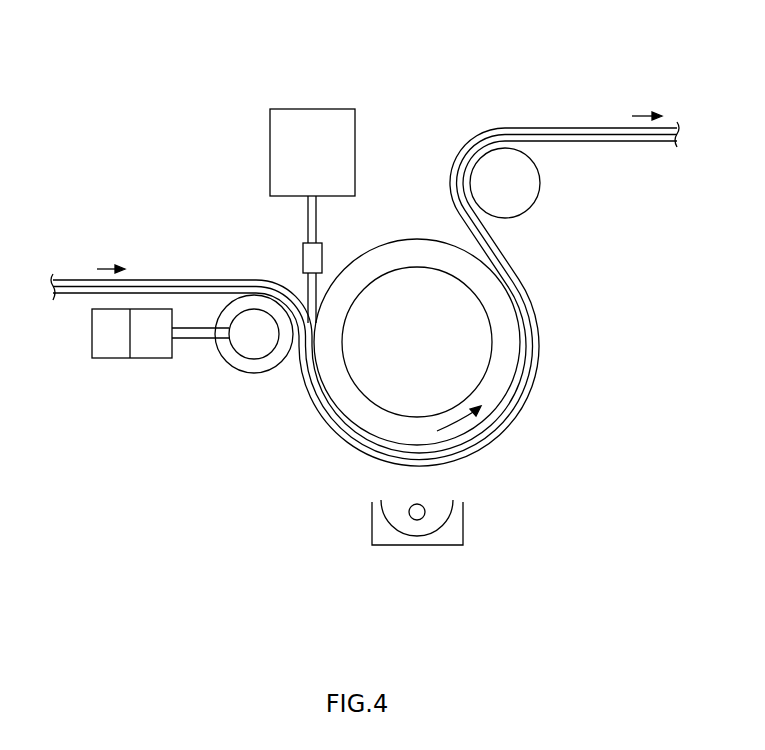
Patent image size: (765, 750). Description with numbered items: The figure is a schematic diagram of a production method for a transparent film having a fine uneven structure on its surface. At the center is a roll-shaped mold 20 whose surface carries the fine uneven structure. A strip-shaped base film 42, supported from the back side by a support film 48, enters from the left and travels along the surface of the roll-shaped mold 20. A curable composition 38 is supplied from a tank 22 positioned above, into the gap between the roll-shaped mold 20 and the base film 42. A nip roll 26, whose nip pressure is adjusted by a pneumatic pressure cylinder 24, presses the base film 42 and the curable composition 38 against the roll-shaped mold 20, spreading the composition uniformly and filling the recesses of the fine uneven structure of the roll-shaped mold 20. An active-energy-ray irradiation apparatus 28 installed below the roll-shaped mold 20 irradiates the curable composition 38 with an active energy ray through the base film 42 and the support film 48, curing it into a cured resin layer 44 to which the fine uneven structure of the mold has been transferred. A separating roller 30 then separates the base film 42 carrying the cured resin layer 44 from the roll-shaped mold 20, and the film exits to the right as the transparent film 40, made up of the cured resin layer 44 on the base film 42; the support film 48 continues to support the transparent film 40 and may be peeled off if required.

The roll-shaped mold 20 is at (410, 238).
The tank 22 is at (270, 147).
The pneumatic pressure cylinder 24 is at (145, 358).
The nip roll 26 is at (252, 373).
The active-energy-ray irradiation apparatus 28 is at (463, 520).
The separating roller 30 is at (540, 183).
The curable composition 38 is at (309, 290).
The transparent film 40 is at (365, 240).
The base film 42 is at (177, 280).
The cured resin layer 44 is at (572, 128).
The support film 48 is at (66, 295).